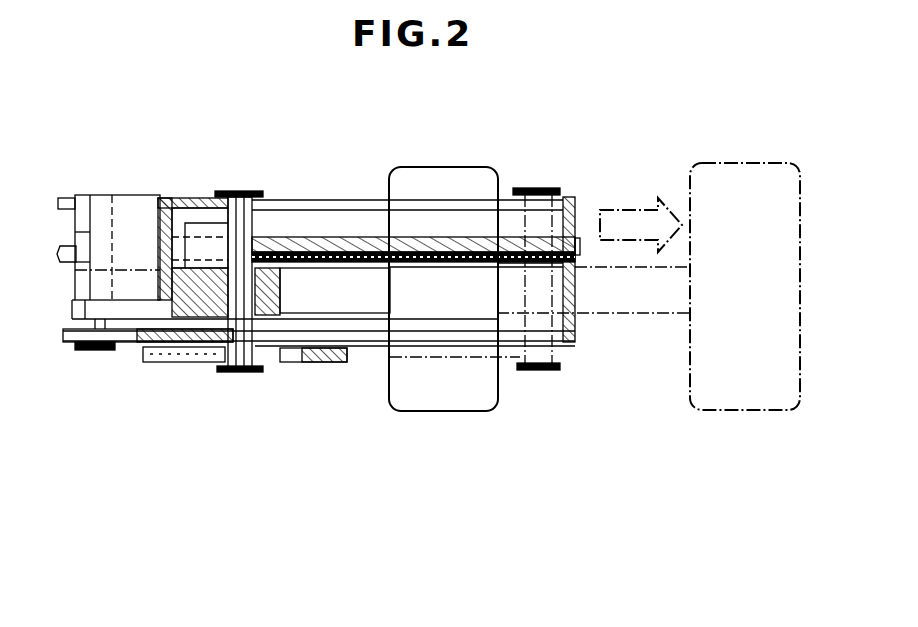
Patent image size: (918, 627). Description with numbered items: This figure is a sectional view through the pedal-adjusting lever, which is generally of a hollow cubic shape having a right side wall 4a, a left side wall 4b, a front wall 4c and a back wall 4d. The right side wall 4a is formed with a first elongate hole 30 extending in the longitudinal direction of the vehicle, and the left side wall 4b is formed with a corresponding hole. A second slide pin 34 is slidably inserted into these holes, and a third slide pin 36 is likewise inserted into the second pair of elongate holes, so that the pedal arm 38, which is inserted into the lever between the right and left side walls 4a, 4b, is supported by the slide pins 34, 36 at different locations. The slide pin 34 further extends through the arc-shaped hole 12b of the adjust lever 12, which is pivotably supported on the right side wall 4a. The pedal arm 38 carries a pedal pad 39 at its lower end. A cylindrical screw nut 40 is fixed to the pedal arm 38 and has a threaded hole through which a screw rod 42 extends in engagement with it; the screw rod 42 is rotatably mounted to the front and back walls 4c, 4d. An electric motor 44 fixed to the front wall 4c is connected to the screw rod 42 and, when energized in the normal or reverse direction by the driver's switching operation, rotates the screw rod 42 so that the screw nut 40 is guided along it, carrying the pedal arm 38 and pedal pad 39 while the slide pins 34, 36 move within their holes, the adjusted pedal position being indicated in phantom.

The right side wall 4a is at (572, 345).
The left side wall 4b is at (570, 198).
The front wall 4c is at (173, 345).
The back wall 4d is at (575, 300).
The adjust lever 12 is at (327, 367).
The arc-shaped hole 12b is at (280, 353).
The first elongate hole 30 is at (413, 190).
The second slide pin 34 is at (243, 373).
The third slide pin 36 is at (93, 347).
The pedal arm 38 is at (330, 295).
The pedal pad 39 is at (483, 398).
The screw nut 40 is at (197, 240).
The screw rod 42 is at (302, 240).
The electric motor 44 is at (127, 235).